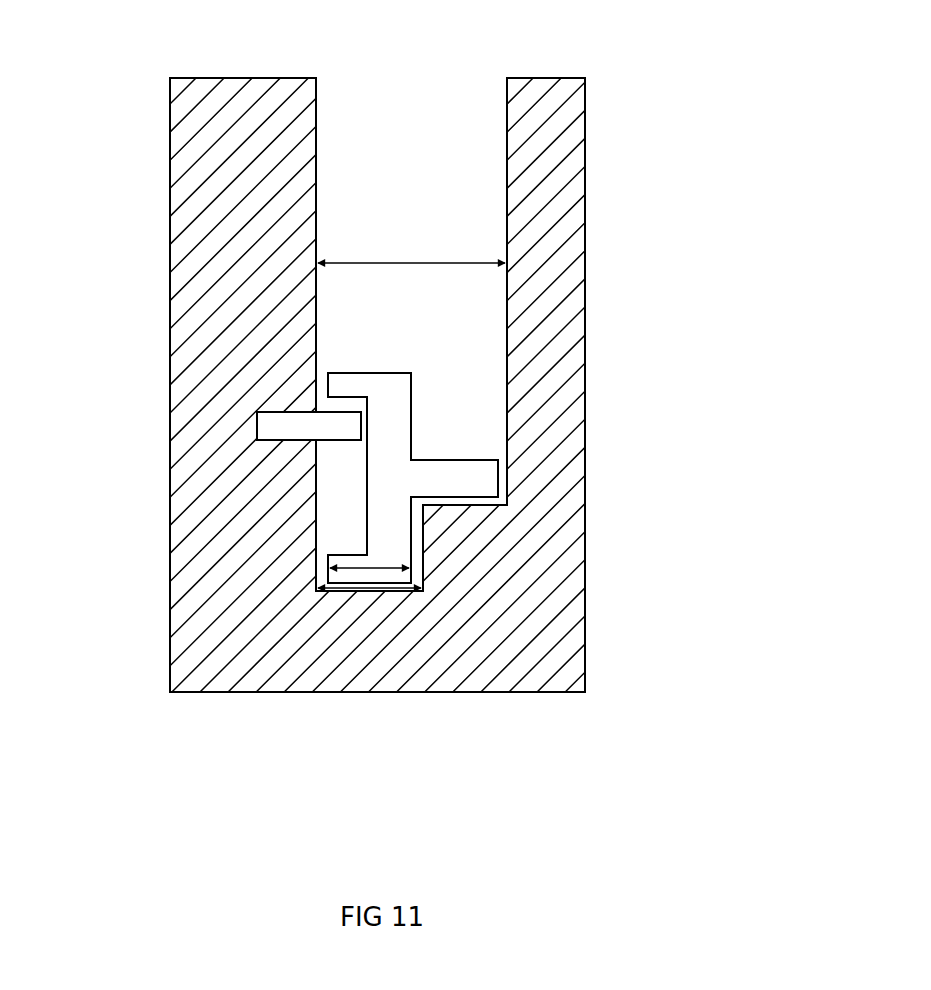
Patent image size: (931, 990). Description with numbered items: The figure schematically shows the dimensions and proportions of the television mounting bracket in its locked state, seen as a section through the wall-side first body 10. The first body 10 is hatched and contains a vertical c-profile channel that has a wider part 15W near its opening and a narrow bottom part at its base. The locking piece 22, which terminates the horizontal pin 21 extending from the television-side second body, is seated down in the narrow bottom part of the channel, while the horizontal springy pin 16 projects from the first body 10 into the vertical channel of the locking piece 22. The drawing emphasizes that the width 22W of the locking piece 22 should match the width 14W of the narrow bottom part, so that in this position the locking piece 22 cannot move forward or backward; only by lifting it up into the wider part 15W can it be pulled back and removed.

The first body 10 is at (555, 159).
The wider part of the vertical c-profile channel 15W is at (408, 262).
The locking piece 22 is at (388, 424).
The horizontal pin 21 is at (487, 487).
The horizontal springy pin 16 is at (278, 427).
The width of the locking piece 22W is at (350, 568).
The width of the narrow bottom part 14W is at (383, 590).